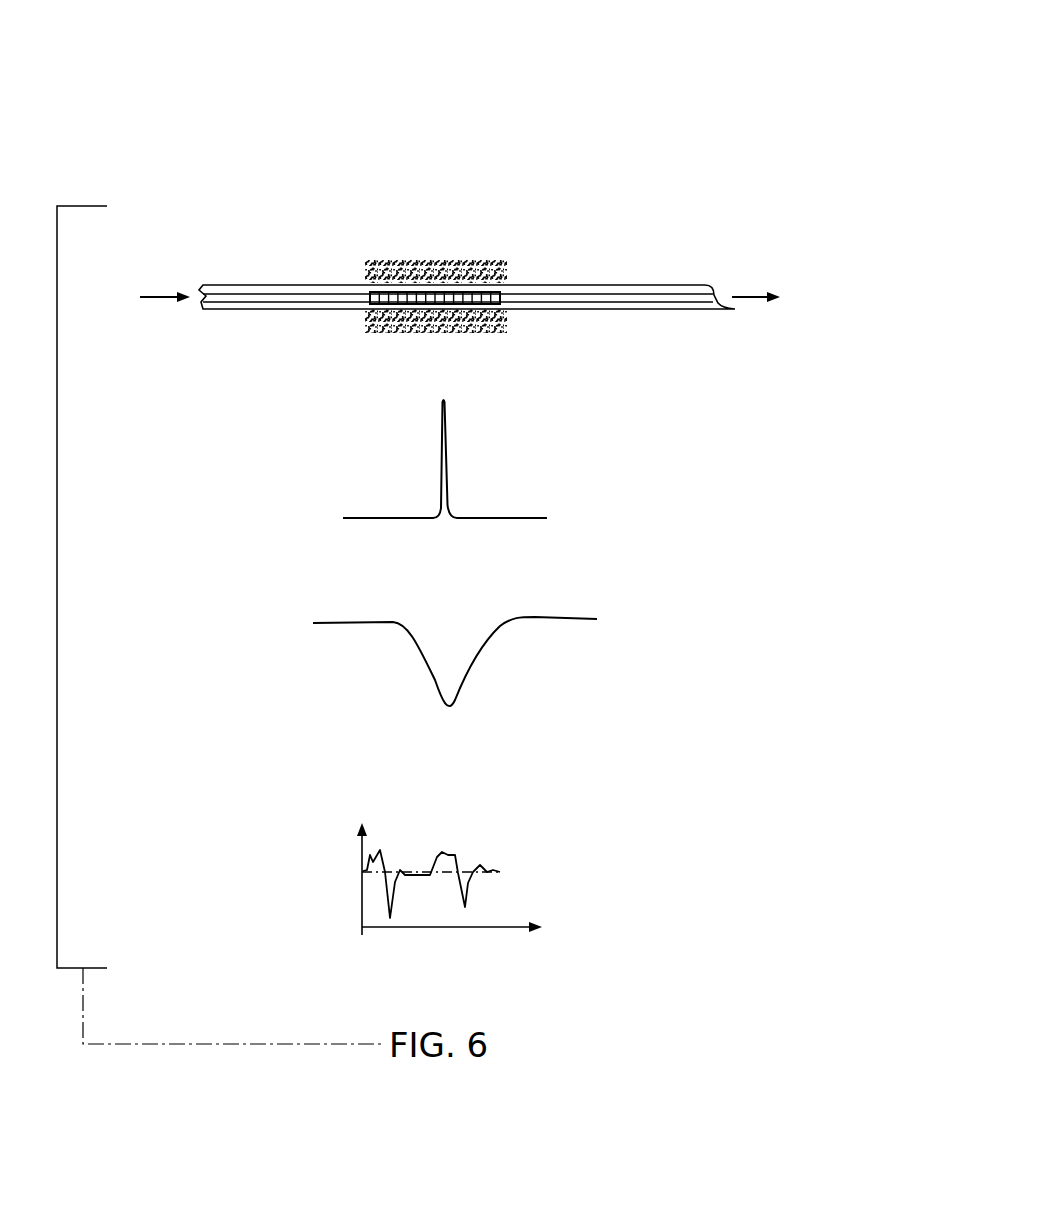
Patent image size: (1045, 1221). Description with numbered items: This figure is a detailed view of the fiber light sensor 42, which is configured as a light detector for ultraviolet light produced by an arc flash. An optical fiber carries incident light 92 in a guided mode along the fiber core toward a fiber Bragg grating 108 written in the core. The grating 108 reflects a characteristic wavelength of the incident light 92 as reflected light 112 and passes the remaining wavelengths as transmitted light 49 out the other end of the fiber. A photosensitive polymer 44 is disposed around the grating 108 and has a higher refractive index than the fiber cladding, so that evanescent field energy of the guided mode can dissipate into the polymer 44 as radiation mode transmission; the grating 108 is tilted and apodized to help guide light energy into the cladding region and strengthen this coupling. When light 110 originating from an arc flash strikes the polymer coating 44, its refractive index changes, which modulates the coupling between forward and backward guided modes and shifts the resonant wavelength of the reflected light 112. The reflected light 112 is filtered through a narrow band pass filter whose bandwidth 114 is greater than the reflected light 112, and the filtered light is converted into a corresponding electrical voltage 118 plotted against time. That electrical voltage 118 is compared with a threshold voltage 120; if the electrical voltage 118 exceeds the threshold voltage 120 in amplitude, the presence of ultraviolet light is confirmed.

The fiber light sensor 42 is at (684, 63).
The photosensitive polymer 44 is at (378, 261).
The transmitted light 49 is at (748, 293).
The incident light 92 is at (163, 293).
The fiber Bragg grating 108 is at (373, 298).
The light originating from arc flash 110 is at (486, 243).
The reflected light 112 is at (447, 425).
The bandwidth 114 is at (486, 656).
The electrical voltage 118 is at (442, 852).
The threshold voltage 120 is at (470, 870).